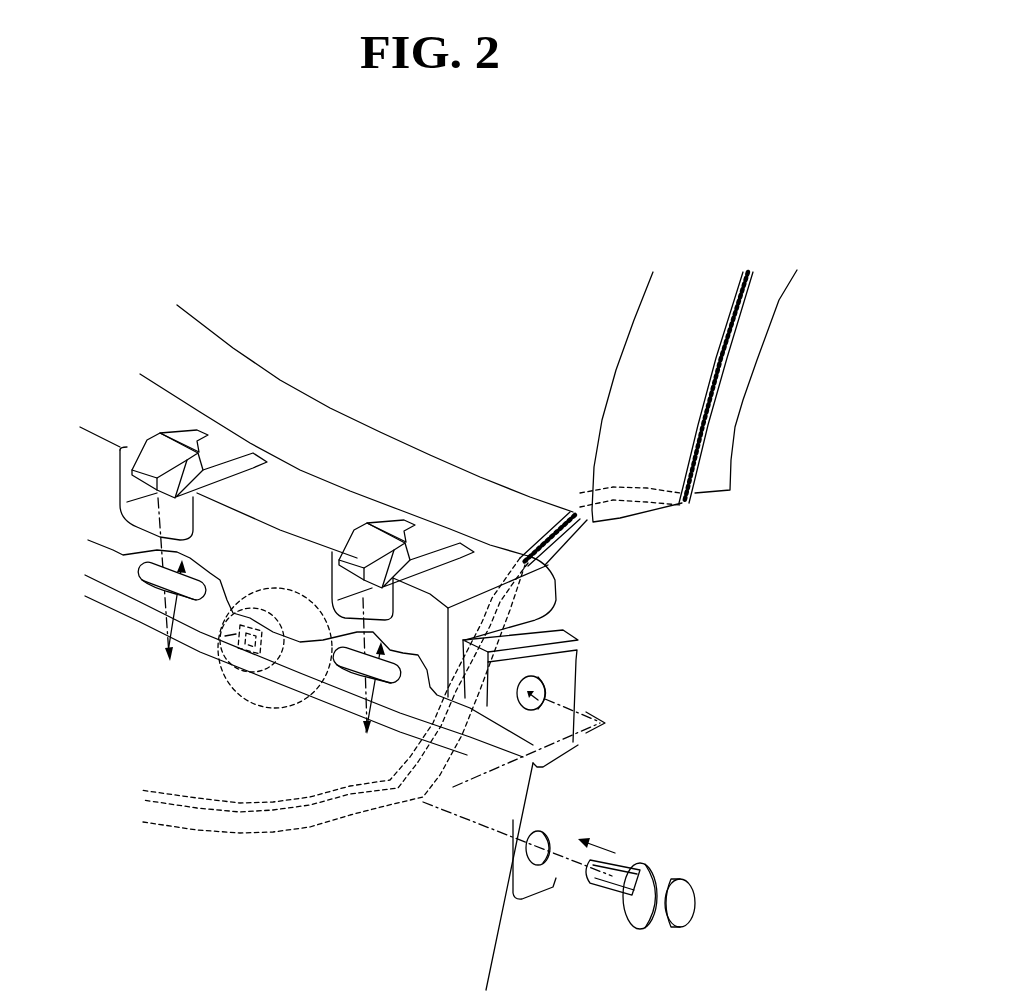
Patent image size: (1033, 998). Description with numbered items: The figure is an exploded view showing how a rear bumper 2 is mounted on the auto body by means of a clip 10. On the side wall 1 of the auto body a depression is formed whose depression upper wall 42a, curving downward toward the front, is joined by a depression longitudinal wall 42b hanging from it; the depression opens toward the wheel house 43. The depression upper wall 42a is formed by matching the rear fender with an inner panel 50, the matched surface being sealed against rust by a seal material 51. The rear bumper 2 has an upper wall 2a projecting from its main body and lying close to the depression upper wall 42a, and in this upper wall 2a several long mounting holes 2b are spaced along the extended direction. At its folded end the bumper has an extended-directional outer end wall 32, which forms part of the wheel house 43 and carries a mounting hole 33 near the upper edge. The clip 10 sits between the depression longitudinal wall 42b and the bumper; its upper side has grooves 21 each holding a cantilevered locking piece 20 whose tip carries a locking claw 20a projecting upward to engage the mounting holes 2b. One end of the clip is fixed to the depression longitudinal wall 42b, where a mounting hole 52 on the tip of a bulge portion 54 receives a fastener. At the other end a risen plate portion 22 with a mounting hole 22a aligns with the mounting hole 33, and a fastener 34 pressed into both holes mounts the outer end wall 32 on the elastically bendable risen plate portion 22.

The side wall 1 is at (447, 300).
The rear bumper 2 is at (245, 791).
The upper wall 2a is at (224, 636).
The mounting holes 2b is at (145, 584).
The clip 10 is at (193, 396).
The locking pieces 20 is at (214, 446).
The locking claw 20a is at (150, 450).
The grooves 21 is at (177, 510).
The risen plate portion 22 is at (567, 673).
The mounting hole 22a is at (548, 693).
The extended-directional outer end wall 32 is at (534, 948).
The mounting hole 33 is at (550, 835).
The fastener 34 is at (688, 893).
The depression upper wall 42a is at (484, 478).
The depression longitudinal wall 42b is at (305, 427).
The wheel house 43 is at (786, 421).
The inner panel 50 is at (372, 810).
The seal material 51 is at (698, 440).
The mounting hole 52 is at (246, 656).
The bulge portion 54 is at (293, 745).